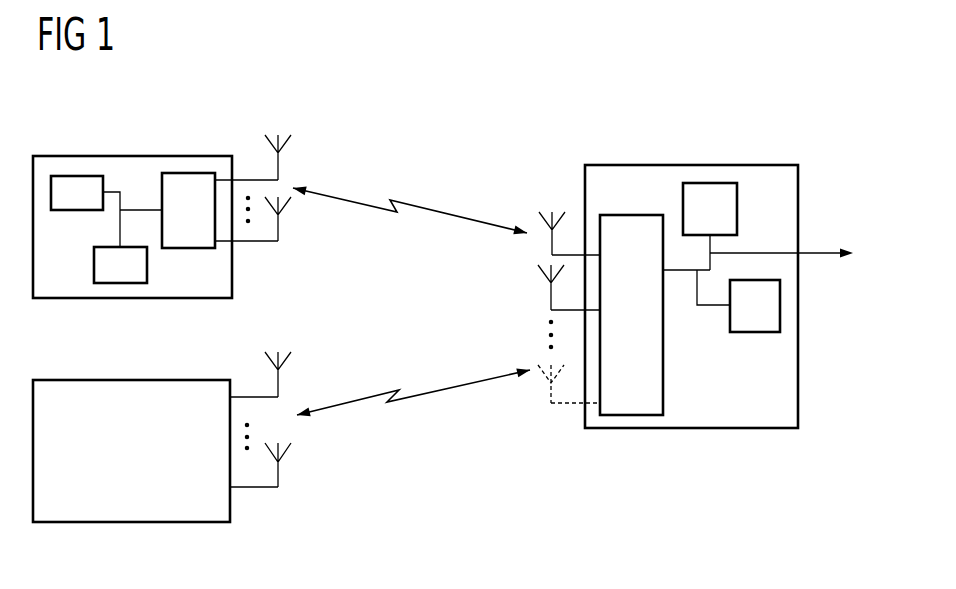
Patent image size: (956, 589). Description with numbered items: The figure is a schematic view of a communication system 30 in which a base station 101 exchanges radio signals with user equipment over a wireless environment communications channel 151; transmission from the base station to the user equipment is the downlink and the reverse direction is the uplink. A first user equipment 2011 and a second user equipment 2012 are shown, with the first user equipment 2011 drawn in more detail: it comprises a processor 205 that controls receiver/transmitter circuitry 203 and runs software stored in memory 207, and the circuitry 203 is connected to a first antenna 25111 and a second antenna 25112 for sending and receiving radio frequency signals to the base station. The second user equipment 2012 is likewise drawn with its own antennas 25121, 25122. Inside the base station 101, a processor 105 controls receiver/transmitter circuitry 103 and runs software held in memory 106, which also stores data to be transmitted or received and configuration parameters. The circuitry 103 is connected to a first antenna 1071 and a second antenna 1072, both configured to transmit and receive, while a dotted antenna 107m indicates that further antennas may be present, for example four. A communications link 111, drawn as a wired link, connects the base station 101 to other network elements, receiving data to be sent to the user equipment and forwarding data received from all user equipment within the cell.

The first user equipment 2011 is at (110, 156).
The second user equipment 2012 is at (130, 380).
The receiver/transmitter circuitry 203 is at (187, 173).
The processor 205 is at (78, 211).
The memory 207 is at (147, 264).
The first antenna 25111 is at (280, 163).
The second antenna 25112 is at (280, 225).
The antenna of second terminal 25121 is at (280, 380).
The antenna of second terminal 25122 is at (280, 473).
The wireless environment communications channel 151 is at (428, 212).
The communication system 30 is at (452, 166).
The base station 101 is at (698, 165).
The receiver/transmitter circuitry 103 is at (664, 350).
The processor 105 is at (683, 200).
The memory 106 is at (754, 333).
The communications link 111 is at (818, 250).
The first antenna 1071 is at (550, 248).
The second antenna 1072 is at (550, 302).
The dotted antenna 107m is at (550, 395).